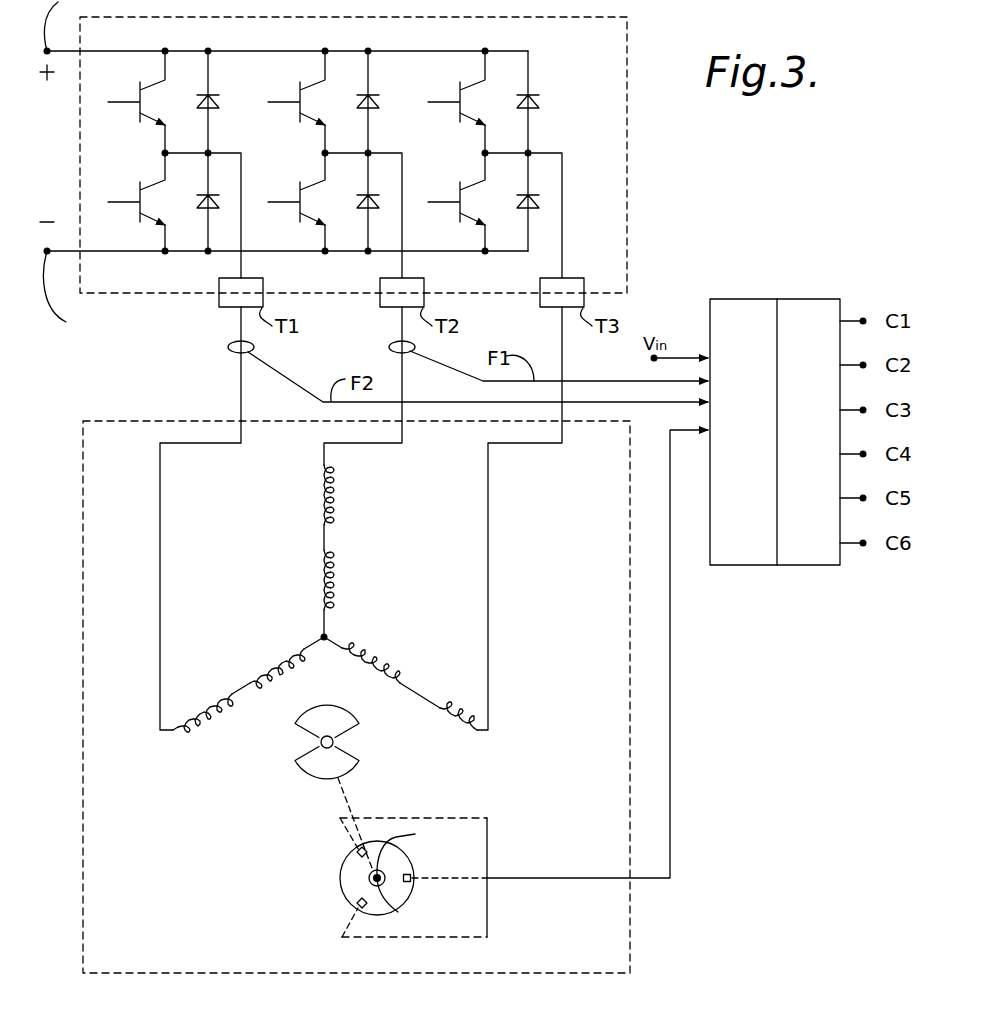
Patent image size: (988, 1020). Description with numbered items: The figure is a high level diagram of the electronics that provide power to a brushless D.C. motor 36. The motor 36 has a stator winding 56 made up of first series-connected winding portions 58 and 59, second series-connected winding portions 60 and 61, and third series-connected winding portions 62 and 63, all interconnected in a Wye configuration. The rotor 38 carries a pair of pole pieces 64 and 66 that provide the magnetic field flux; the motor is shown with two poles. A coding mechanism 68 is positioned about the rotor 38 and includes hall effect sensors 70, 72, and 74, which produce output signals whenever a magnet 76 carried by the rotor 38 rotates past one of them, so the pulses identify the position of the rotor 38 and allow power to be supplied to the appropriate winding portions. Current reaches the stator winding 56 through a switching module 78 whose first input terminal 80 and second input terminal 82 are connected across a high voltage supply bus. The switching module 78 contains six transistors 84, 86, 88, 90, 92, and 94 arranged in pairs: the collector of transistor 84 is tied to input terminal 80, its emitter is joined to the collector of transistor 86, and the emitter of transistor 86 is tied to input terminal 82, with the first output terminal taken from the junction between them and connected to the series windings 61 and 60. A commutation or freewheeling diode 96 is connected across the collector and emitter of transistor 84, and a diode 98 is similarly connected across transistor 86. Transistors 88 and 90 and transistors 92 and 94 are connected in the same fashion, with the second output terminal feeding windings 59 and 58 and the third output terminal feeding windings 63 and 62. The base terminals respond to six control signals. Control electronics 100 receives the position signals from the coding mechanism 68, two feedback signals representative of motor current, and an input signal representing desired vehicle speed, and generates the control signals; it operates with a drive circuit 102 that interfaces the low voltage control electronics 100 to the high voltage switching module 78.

The brushless D.C. motor 36 is at (146, 418).
The rotor 38 is at (389, 832).
The stator winding 56 is at (233, 553).
The first winding portion 58 is at (334, 592).
The first winding portion 59 is at (334, 483).
The second winding portion 60 is at (277, 668).
The second winding portion 61 is at (208, 707).
The third winding portion 62 is at (372, 665).
The third winding portion 63 is at (443, 712).
The pole piece 64 is at (353, 720).
The pole piece 66 is at (298, 758).
The coding mechanism 68 is at (338, 878).
The hall effect sensor 70 is at (412, 875).
The hall effect sensor 72 is at (360, 906).
The hall effect sensor 74 is at (360, 851).
The magnet 76 is at (398, 905).
The switching module 78 is at (630, 123).
The first input terminal 80 is at (65, 25).
The second input terminal 82 is at (69, 294).
The transistor 84 is at (135, 106).
The transistor 86 is at (135, 206).
The transistor 88 is at (295, 106).
The transistor 90 is at (295, 206).
The transistor 92 is at (455, 106).
The transistor 94 is at (455, 206).
The diode 96 is at (213, 100).
The diode 98 is at (203, 202).
The control electronics 100 is at (762, 296).
The drive circuit 102 is at (820, 568).